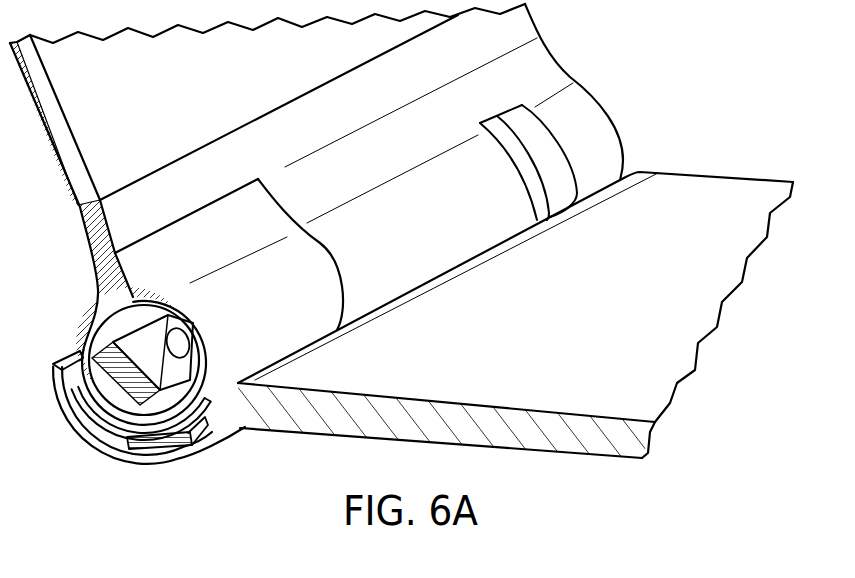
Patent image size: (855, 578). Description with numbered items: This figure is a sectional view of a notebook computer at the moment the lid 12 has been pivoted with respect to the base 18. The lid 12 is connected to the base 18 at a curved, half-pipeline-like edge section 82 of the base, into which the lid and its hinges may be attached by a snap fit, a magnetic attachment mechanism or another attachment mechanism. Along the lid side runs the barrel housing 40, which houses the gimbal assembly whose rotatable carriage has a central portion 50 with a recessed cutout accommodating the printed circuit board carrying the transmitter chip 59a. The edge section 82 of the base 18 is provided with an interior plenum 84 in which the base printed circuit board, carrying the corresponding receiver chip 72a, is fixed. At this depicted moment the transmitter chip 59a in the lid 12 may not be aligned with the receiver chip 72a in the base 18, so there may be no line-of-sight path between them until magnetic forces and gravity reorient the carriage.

The lid 12 is at (85, 223).
The base 18 is at (670, 358).
The barrel housing 40 is at (467, 238).
The central portion 50 is at (135, 390).
The transmitter chip 59a is at (112, 390).
The receiver chip 72a is at (142, 440).
The edge section 82 is at (68, 398).
The interior plenum 84 is at (62, 378).